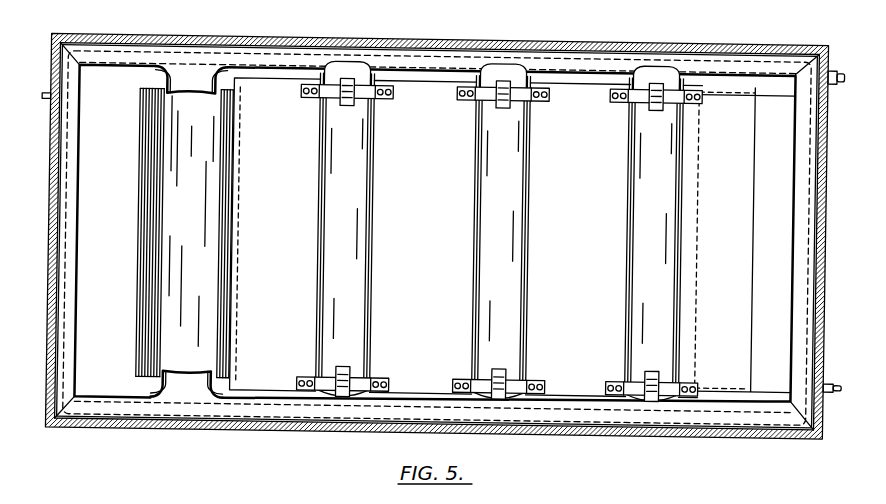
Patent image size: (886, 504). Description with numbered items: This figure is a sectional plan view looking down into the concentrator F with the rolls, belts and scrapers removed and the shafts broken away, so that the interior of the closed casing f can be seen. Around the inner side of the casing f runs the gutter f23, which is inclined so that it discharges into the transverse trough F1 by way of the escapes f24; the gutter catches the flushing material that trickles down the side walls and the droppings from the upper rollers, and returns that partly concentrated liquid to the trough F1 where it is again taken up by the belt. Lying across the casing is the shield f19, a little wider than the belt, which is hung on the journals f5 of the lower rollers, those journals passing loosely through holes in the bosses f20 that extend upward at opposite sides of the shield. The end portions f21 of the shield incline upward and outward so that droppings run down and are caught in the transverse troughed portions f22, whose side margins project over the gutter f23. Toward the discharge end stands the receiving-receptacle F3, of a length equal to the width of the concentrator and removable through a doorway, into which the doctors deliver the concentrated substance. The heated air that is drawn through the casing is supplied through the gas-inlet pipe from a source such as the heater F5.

The closed casing f is at (395, 41).
The concentrator F is at (437, 236).
The gutter f23 is at (112, 54).
The escapes f24 is at (188, 232).
The transverse trough F1 is at (185, 232).
The inclined end portions of shield f21 is at (47, 97).
The shield f19 is at (536, 238).
The transverse troughed portions f22 is at (500, 225).
The boss f20 is at (460, 100).
The journals of lower rollers f5 is at (345, 105).
The heater F5 is at (832, 58).
The receiving-receptacle F3 is at (768, 392).